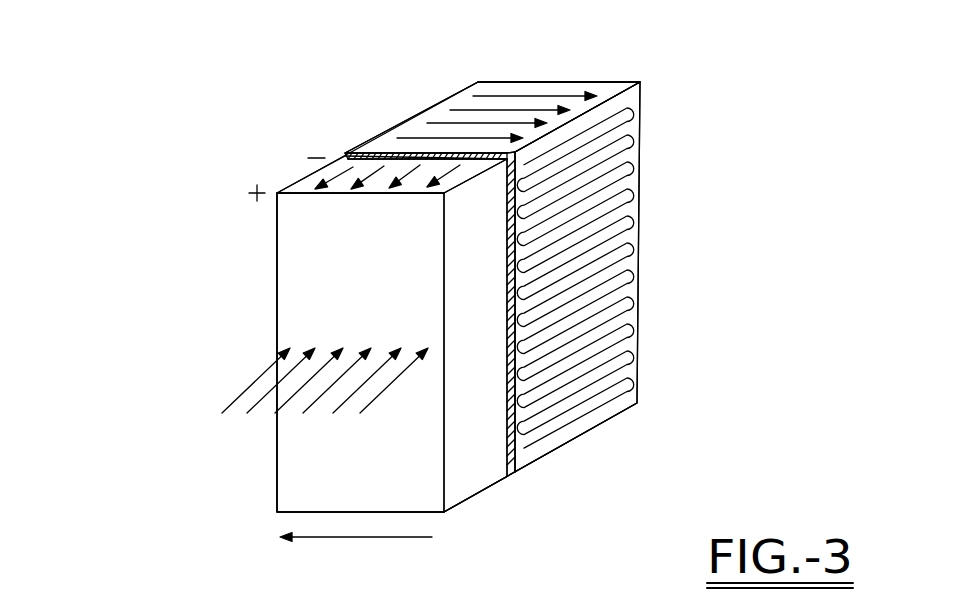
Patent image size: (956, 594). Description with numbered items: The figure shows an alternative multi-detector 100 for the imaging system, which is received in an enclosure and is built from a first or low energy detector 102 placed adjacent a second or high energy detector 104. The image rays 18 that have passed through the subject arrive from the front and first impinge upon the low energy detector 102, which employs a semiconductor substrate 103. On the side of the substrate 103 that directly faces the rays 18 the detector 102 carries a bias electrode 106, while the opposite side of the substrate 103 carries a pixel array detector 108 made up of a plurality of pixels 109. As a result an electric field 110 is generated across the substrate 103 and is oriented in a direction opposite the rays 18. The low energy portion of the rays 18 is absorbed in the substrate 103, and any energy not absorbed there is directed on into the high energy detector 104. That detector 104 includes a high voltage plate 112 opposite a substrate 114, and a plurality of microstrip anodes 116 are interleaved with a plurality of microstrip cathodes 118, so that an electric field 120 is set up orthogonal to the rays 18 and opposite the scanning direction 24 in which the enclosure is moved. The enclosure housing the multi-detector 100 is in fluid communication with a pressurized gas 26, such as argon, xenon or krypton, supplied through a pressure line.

The multi-detector 100 is at (224, 78).
The pressurized gas 26 is at (412, 124).
The high energy detector 104 is at (372, 122).
The pixel array detector 108 is at (343, 150).
The low energy detector 102 is at (287, 171).
The electric field 110 is at (345, 158).
The bias electrode 106 is at (315, 268).
The rays 18 is at (246, 391).
The semiconductor substrate 103 is at (295, 463).
The scanning direction 24 is at (337, 537).
The high voltage plate 112 is at (478, 82).
The electric field 120 is at (543, 97).
The microstrip anodes 116 is at (622, 135).
The microstrip cathodes 118 is at (623, 183).
The substrate 114 is at (608, 411).
The pixels 109 is at (510, 473).